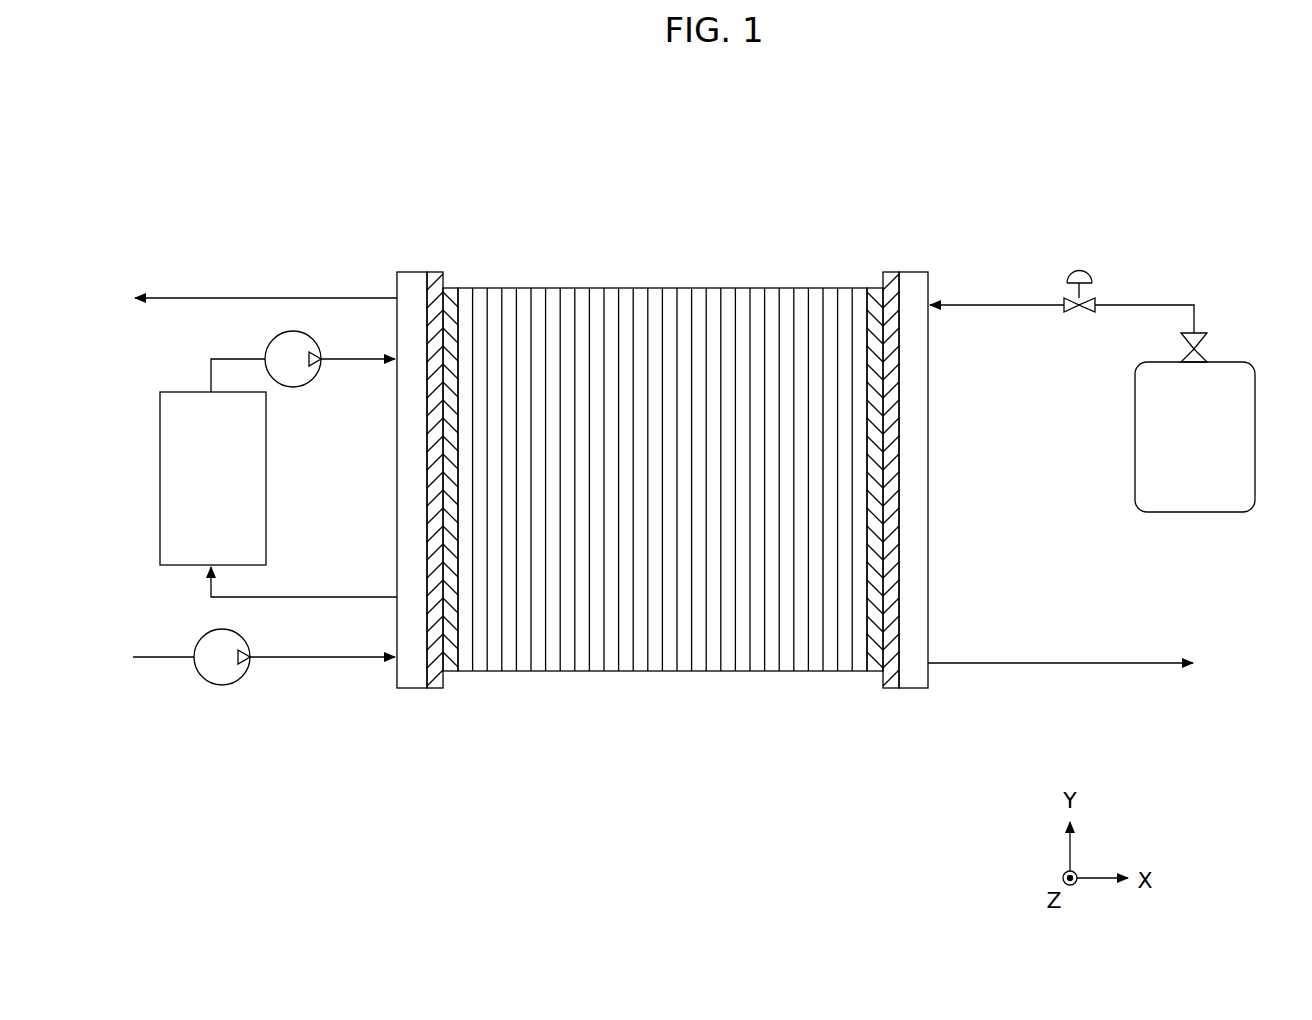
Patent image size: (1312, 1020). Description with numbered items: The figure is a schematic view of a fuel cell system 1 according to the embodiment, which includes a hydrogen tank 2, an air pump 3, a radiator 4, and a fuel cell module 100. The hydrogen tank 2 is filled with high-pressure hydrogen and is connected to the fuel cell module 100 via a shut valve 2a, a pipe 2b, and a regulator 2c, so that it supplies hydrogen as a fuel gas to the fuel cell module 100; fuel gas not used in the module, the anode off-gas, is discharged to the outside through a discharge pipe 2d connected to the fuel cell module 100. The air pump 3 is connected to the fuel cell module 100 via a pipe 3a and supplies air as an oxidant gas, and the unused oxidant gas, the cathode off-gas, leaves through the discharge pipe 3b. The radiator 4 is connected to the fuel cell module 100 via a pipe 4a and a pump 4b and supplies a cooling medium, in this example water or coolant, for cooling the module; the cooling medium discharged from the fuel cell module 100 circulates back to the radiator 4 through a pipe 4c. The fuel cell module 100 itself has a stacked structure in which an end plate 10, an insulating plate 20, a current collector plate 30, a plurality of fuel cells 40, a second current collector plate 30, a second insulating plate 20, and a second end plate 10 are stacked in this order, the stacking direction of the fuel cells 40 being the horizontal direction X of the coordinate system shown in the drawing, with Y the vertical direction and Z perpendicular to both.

The fuel cell system 1 is at (268, 133).
The fuel cell module 100 is at (388, 200).
The end plate 10 is at (411, 272).
The insulating plate 20 is at (435, 272).
The current collector plate 30 is at (455, 288).
The fuel cells 40 is at (671, 288).
The hydrogen tank 2 is at (1255, 398).
The shut valve 2a is at (1207, 342).
The pipe 2b is at (1007, 304).
The regulator 2c is at (1086, 318).
The discharge pipe 2d is at (1035, 666).
The air pump 3 is at (222, 686).
The pipe 3a is at (318, 660).
The discharge pipe 3b is at (267, 298).
The radiator 4 is at (160, 414).
The pipe 4a is at (365, 362).
The pump 4b is at (293, 388).
The pipe 4c is at (315, 596).